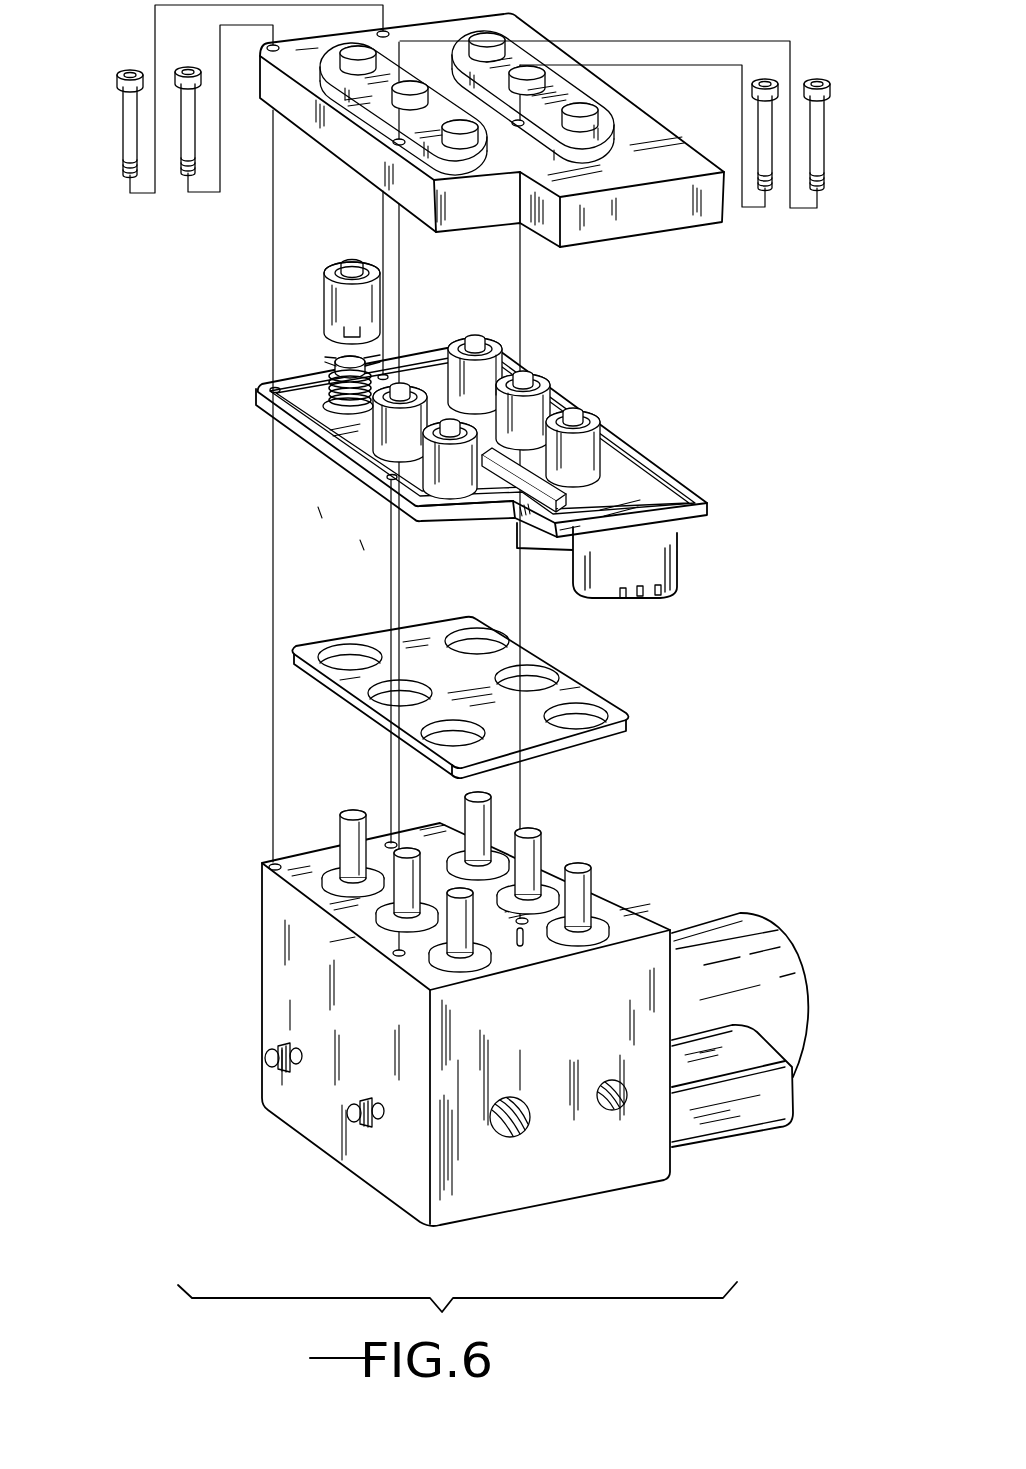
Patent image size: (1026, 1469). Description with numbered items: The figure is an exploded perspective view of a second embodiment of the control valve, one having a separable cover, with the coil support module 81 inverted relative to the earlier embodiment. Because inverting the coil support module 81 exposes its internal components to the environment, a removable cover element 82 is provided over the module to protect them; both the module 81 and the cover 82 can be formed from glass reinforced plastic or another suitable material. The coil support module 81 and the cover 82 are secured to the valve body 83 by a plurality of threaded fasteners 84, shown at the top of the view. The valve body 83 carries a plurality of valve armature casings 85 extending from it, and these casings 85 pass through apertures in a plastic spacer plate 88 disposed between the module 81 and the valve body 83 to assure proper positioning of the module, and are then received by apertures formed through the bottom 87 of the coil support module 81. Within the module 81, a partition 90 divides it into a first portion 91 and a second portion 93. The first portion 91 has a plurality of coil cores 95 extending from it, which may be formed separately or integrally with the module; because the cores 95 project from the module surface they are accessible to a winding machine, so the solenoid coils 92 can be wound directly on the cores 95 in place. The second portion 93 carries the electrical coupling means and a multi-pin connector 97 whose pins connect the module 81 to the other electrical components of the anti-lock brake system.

The coil support module 81 is at (518, 429).
The cover element 82 is at (634, 175).
The valve body 83 is at (535, 1020).
The threaded fasteners 84 is at (128, 160).
The valve armature casings 85 is at (517, 862).
The bottom 87 is at (477, 516).
The spacer plate 88 is at (308, 641).
The partition 90 is at (645, 486).
The first portion 91 is at (559, 389).
The solenoid coils 92 is at (318, 392).
The second portion 93 is at (645, 497).
The coil cores 95 is at (364, 358).
The multi-pin connector 97 is at (660, 553).